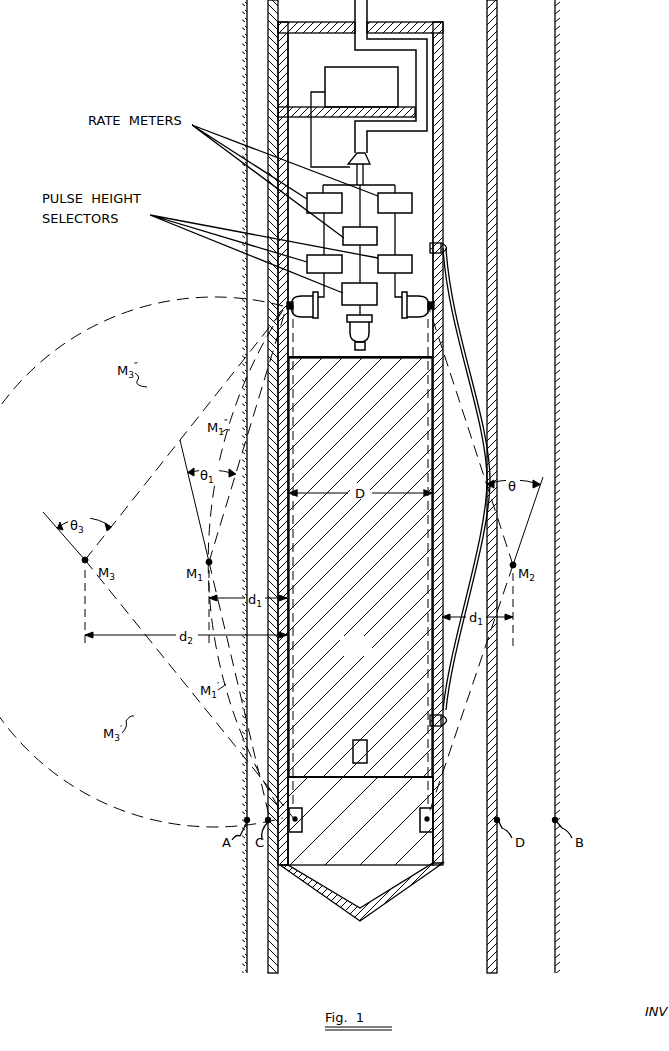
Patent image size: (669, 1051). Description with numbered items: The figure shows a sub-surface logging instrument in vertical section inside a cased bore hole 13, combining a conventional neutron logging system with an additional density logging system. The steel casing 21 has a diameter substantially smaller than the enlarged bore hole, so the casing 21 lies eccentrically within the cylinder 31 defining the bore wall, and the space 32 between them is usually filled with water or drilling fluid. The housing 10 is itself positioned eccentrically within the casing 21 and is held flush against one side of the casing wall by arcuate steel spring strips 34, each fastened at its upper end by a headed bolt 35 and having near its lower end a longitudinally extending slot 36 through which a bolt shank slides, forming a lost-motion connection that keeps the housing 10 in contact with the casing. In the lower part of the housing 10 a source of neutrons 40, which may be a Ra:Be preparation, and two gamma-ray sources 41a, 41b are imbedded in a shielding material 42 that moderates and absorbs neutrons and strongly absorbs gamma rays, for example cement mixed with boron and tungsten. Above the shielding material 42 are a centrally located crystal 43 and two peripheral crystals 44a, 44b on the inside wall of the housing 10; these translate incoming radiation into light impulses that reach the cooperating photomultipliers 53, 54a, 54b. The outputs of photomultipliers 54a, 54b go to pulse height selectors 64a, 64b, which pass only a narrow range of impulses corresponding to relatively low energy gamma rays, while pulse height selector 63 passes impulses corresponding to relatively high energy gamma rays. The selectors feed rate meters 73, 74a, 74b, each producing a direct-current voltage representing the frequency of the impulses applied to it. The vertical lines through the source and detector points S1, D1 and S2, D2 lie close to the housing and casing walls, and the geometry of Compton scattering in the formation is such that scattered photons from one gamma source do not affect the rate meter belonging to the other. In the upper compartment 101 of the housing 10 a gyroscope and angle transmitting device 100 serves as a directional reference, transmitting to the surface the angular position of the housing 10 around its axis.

The housing 10 is at (443, 168).
The bore hole 13 is at (546, 78).
The casing 21 is at (498, 801).
The cylinder defining the walls of the bore 31 is at (557, 890).
The space between casing and bore wall 32 is at (545, 699).
The spring strip 34 is at (455, 345).
The headed bolt 35 is at (446, 244).
The slot 36 is at (446, 262).
The source of neutrons 40 is at (367, 752).
The source of gamma rays 41a is at (258, 847).
The source of gamma rays 41b is at (435, 846).
The shielding material 42 is at (360, 567).
The crystal 43 is at (355, 346).
The crystal 44a is at (285, 300).
The crystal 44b is at (437, 302).
The photomultiplier 53 is at (372, 333).
The photomultiplier 54a is at (308, 318).
The photomultiplier 54b is at (410, 318).
The pulse height selector 63 is at (359, 299).
The pulse height selector 64a is at (324, 276).
The pulse height selector 64b is at (395, 276).
The rate meter 73 is at (360, 255).
The rate meter 74a is at (324, 224).
The rate meter 74b is at (395, 224).
The gyroscope and angle transmitting device 100 is at (352, 113).
The compartment 101 is at (300, 50).
The detector point D1 is at (283, 305).
The detector point D2 is at (437, 306).
The source point S1 is at (305, 832).
The source point S2 is at (424, 830).